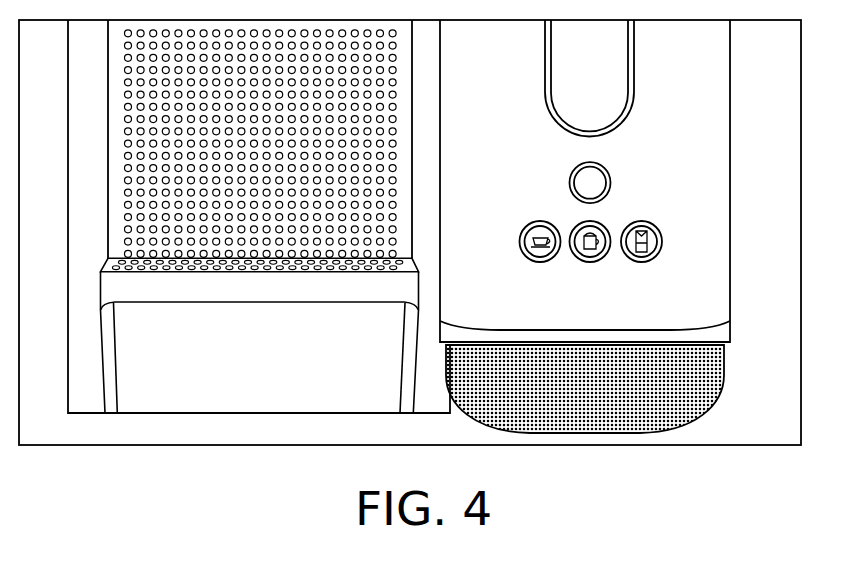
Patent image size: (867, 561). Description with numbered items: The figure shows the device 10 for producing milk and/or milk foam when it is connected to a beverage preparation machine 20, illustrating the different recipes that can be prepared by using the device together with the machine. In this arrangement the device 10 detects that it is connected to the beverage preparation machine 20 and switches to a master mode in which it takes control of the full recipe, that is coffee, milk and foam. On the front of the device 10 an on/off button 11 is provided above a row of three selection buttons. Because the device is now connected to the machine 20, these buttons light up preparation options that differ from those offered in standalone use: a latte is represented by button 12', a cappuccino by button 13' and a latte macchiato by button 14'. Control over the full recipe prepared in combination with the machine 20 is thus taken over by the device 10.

The device for producing milk and/or milk foam 10 is at (719, 186).
The on/off button 11 is at (611, 183).
The latte button 12' is at (541, 269).
The cappuccino button 13' is at (591, 269).
The latte macchiato button 14' is at (641, 269).
The beverage preparation machine 20 is at (121, 185).